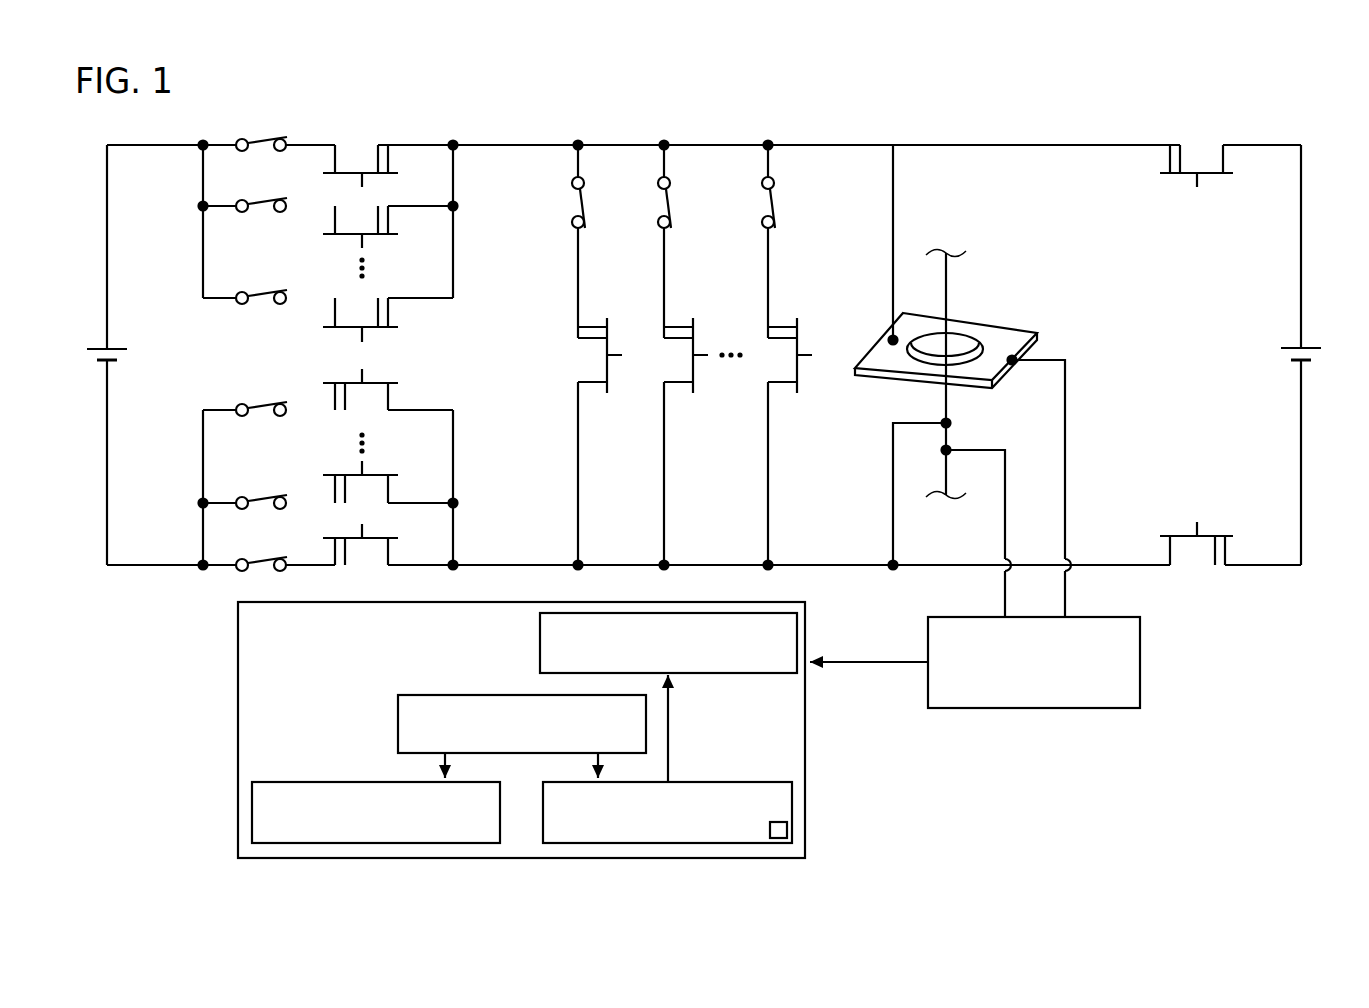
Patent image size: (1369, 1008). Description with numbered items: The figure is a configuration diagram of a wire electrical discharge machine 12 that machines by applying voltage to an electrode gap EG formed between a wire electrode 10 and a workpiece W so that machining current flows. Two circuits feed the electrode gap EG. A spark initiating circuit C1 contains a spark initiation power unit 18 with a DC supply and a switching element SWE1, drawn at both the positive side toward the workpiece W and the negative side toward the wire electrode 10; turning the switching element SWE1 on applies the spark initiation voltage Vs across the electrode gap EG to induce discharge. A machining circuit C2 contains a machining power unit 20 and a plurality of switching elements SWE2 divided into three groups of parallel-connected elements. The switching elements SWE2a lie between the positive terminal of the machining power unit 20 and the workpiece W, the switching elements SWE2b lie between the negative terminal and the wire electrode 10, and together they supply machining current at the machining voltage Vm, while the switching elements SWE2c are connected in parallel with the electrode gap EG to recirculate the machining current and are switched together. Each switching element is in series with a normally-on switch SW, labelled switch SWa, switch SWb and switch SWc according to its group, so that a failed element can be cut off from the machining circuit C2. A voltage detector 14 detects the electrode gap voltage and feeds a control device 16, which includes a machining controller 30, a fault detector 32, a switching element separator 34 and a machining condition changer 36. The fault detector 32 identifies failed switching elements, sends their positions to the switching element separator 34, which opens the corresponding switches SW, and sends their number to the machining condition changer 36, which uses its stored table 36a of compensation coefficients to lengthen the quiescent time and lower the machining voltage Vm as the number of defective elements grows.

The wire electrode 10 is at (947, 405).
The wire electrical discharge machine 12 is at (724, 96).
The voltage detector 14 is at (1141, 636).
The control device 16 is at (237, 623).
The spark initiation power unit 18 is at (1310, 343).
The machining power unit 20 is at (95, 345).
The machining controller 30 is at (753, 677).
The fault detector 32 is at (490, 692).
The switching element separator 34 is at (332, 780).
The machining condition changer 36 is at (698, 780).
The table 36a is at (788, 829).
The spark initiating circuit C1 is at (1261, 130).
The machining circuit C2 is at (494, 130).
The switch SW is at (227, 287).
The first switch SWa is at (243, 220).
The first switch SWb is at (243, 486).
The second switch SWc is at (673, 185).
The switching element SWE1 is at (1207, 188).
The switching element SWE2 is at (400, 160).
The first switching element SWE2a is at (390, 242).
The first switching element SWE2b is at (390, 469).
The second switching element SWE2c is at (693, 399).
The electrode gap EG is at (961, 350).
The workpiece W is at (1016, 336).
The machining voltage Vm is at (98, 369).
The spark initiation voltage Vs is at (1309, 367).